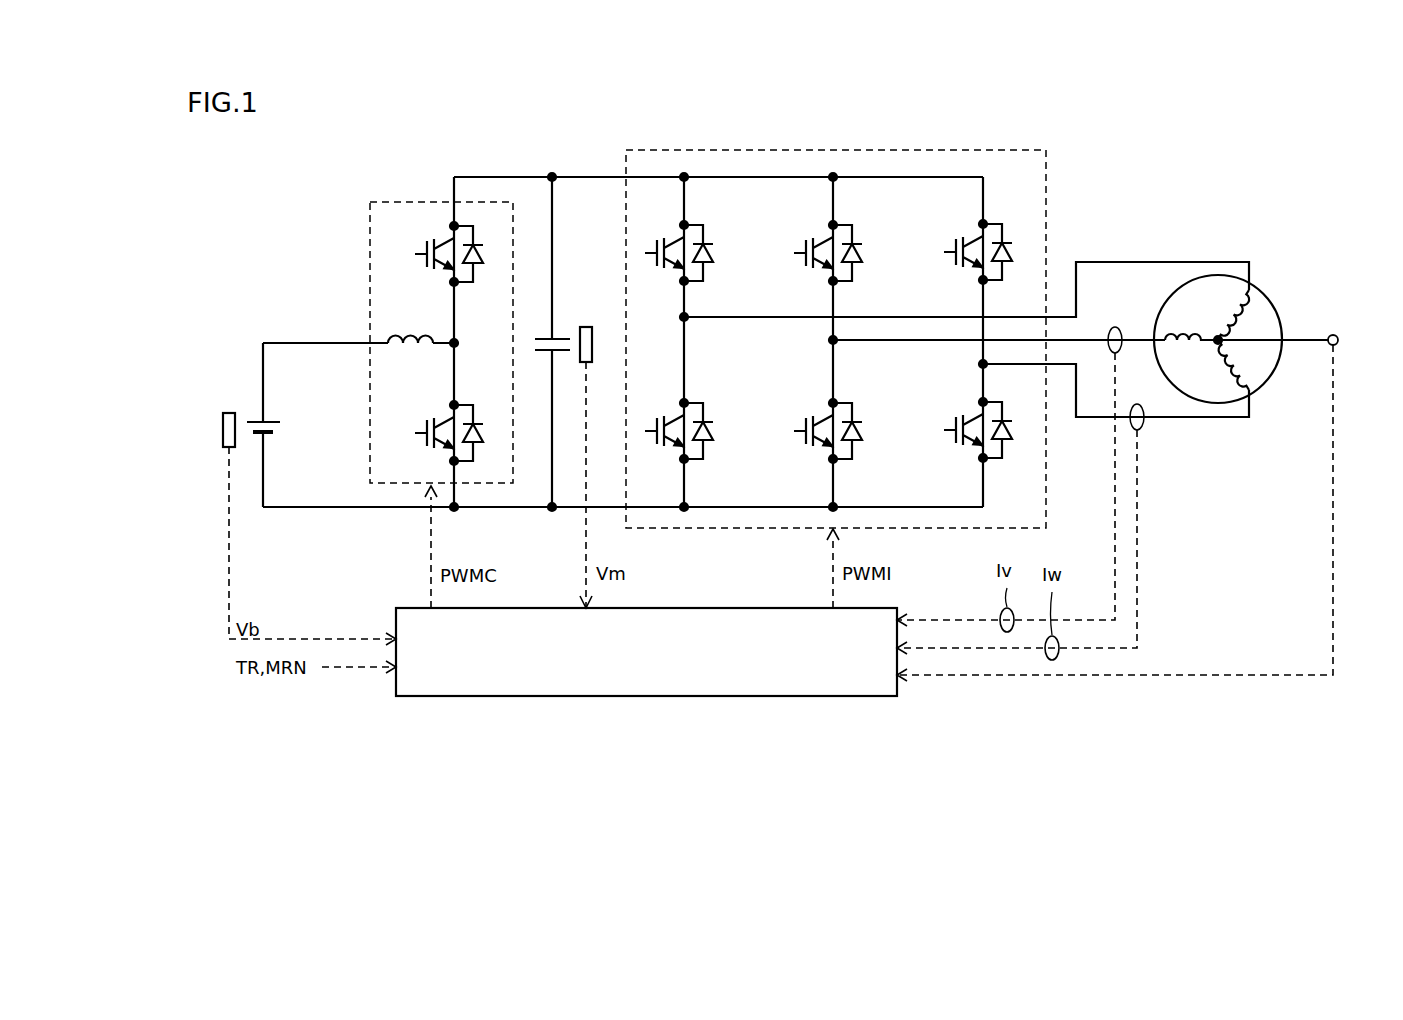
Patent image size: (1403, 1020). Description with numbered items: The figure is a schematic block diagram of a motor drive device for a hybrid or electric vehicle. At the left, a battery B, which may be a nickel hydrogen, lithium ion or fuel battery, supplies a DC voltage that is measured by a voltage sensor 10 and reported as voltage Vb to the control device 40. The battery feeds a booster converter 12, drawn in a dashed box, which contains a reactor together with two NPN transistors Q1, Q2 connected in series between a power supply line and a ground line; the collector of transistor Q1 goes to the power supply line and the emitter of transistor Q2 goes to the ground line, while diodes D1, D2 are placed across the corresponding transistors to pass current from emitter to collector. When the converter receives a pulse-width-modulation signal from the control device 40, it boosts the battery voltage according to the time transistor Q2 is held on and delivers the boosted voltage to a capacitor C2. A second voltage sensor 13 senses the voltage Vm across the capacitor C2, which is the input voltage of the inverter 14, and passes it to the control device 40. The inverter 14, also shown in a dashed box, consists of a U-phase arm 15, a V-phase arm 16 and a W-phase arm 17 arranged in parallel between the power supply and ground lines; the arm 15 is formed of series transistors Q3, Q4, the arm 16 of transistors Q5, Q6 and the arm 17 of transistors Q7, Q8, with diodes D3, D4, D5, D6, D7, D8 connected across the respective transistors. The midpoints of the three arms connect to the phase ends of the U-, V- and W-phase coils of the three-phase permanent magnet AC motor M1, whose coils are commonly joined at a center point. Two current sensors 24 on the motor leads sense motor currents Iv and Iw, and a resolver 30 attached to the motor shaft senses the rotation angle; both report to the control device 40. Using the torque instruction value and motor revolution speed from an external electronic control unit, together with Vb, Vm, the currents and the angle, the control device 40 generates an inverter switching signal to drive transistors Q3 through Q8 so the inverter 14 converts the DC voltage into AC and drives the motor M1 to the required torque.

The voltage sensor 10 is at (230, 411).
The booster converter 12 is at (441, 319).
The voltage sensor 13 is at (586, 325).
The inverter 14 is at (937, 316).
The U-phase arm 15 is at (671, 327).
The V-phase arm 16 is at (820, 352).
The W-phase arm 17 is at (971, 367).
The current sensor 24 is at (1114, 327).
The resolver 30 is at (1339, 337).
The control device 40 is at (850, 697).
The battery B is at (277, 420).
The capacitor C2 is at (547, 337).
The AC motor M1 is at (1266, 293).
The NPN transistor Q1 is at (436, 250).
The NPN transistor Q2 is at (436, 429).
The NPN transistor Q3 is at (666, 249).
The NPN transistor Q4 is at (666, 427).
The NPN transistor Q5 is at (815, 249).
The NPN transistor Q6 is at (815, 427).
The NPN transistor Q7 is at (965, 248).
The NPN transistor Q8 is at (965, 426).
The diode D1 is at (480, 257).
The diode D2 is at (480, 436).
The diode D3 is at (710, 256).
The diode D4 is at (710, 434).
The diode D5 is at (859, 256).
The diode D6 is at (859, 434).
The diode D7 is at (1009, 255).
The diode D8 is at (1009, 433).